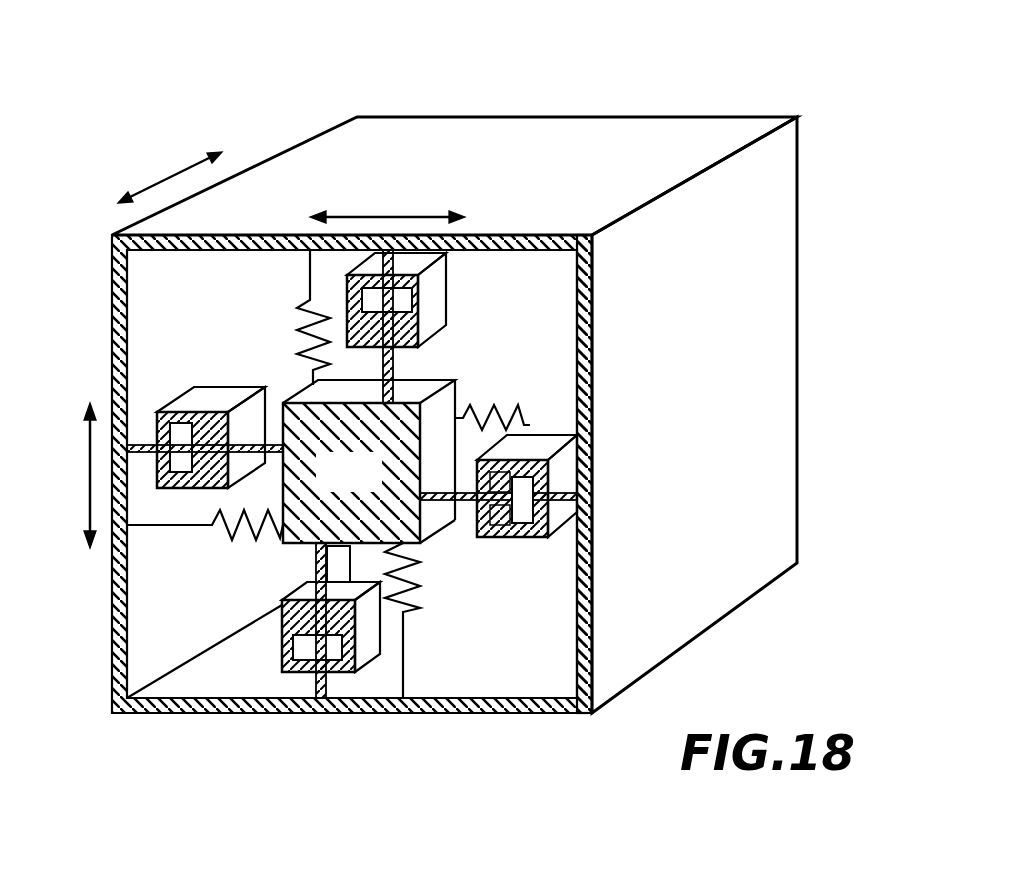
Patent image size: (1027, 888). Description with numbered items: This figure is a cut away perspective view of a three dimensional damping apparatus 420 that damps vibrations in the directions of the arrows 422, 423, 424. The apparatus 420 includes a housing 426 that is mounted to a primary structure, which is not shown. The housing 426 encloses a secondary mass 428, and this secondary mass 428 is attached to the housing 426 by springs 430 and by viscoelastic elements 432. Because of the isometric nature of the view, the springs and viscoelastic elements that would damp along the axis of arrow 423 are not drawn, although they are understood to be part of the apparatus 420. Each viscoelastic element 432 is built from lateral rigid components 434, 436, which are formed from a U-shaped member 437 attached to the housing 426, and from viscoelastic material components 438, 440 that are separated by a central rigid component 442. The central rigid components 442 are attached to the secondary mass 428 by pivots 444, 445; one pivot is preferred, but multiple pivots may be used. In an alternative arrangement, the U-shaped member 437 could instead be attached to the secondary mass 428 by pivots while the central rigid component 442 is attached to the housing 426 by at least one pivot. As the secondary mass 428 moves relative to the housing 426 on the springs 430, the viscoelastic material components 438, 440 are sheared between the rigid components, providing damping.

The three dimensional damping apparatus 420 is at (626, 108).
The arrow 422 is at (384, 214).
The arrow 423 is at (161, 184).
The arrow 424 is at (88, 478).
The housing 426 is at (777, 297).
The secondary mass 428 is at (325, 489).
The springs 430 is at (522, 410).
The viscoelastic elements 432 is at (445, 301).
The lateral rigid component 434 is at (578, 433).
The lateral rigid component 436 is at (533, 540).
The U-shaped member 437 is at (565, 463).
The viscoelastic material component 438 is at (490, 537).
The viscoelastic material component 440 is at (520, 440).
The central rigid component 442 is at (505, 537).
The pivot 444 is at (578, 537).
The pivot 445 is at (423, 502).